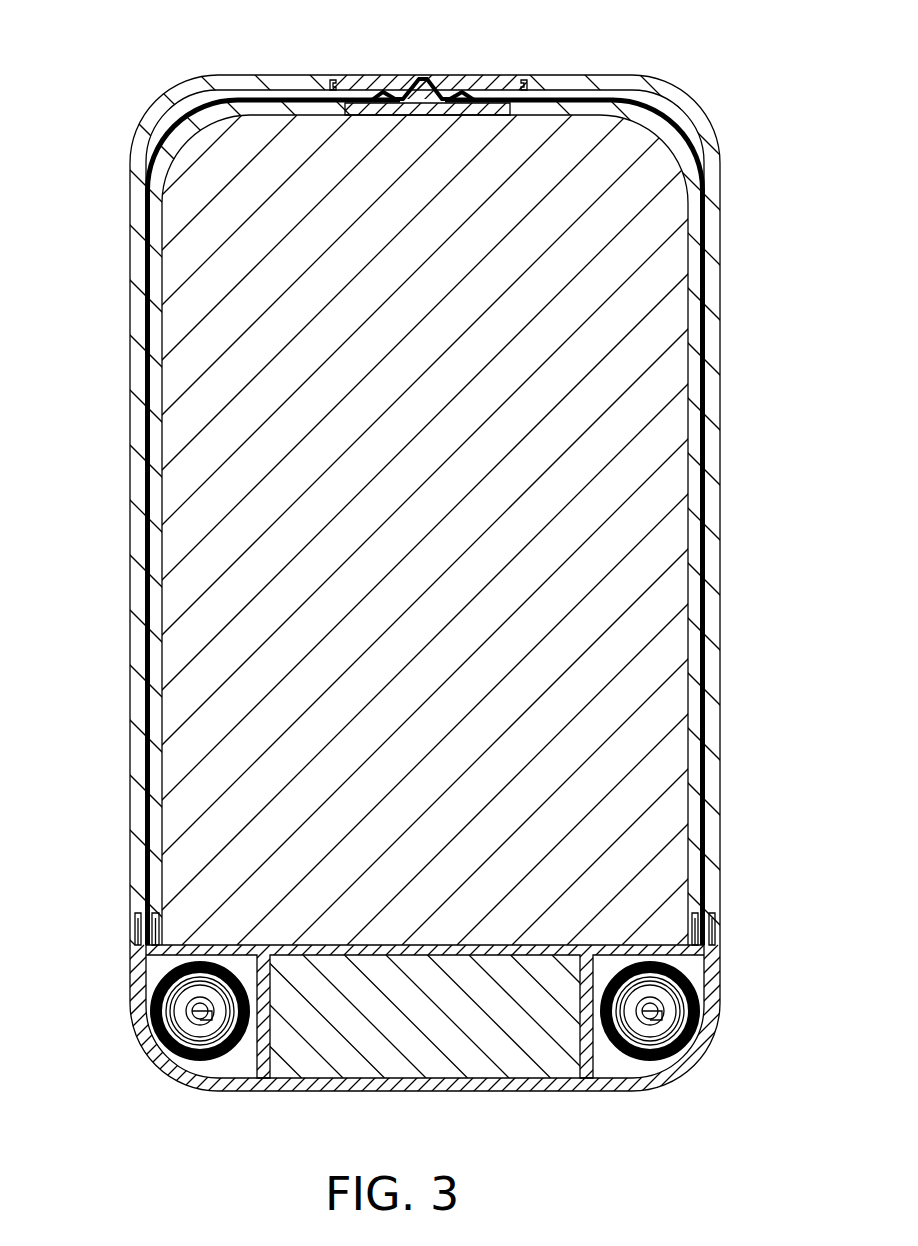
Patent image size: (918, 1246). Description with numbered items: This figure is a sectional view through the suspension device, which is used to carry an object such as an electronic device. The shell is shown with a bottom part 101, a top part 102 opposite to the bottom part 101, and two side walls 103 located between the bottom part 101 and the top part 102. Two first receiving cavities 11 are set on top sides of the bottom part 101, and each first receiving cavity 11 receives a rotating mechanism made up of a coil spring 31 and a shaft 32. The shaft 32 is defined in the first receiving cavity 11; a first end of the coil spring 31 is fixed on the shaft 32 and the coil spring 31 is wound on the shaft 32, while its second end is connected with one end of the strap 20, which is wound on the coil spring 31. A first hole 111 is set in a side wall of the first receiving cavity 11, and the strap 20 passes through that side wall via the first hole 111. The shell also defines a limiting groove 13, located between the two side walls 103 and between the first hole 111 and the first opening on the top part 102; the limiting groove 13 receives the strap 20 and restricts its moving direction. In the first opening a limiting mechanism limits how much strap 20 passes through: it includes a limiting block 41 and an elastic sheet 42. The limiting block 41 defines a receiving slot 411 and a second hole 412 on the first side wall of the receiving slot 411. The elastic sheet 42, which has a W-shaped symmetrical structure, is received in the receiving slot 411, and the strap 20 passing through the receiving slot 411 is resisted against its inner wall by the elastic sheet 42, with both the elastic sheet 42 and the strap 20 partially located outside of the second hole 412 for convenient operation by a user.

The bottom part 101 is at (496, 1093).
The top part 102 is at (270, 75).
The side walls 103 is at (136, 534).
The first receiving cavity 11 is at (693, 972).
The first hole 111 is at (710, 935).
The limiting groove 13 is at (692, 797).
The strap 20 is at (670, 137).
The coil spring 31 is at (690, 1030).
The shaft 32 is at (660, 1013).
The limiting block 41 is at (512, 77).
The receiving slot 411 is at (488, 96).
The second hole 412 is at (433, 80).
The elastic sheet 42 is at (392, 92).